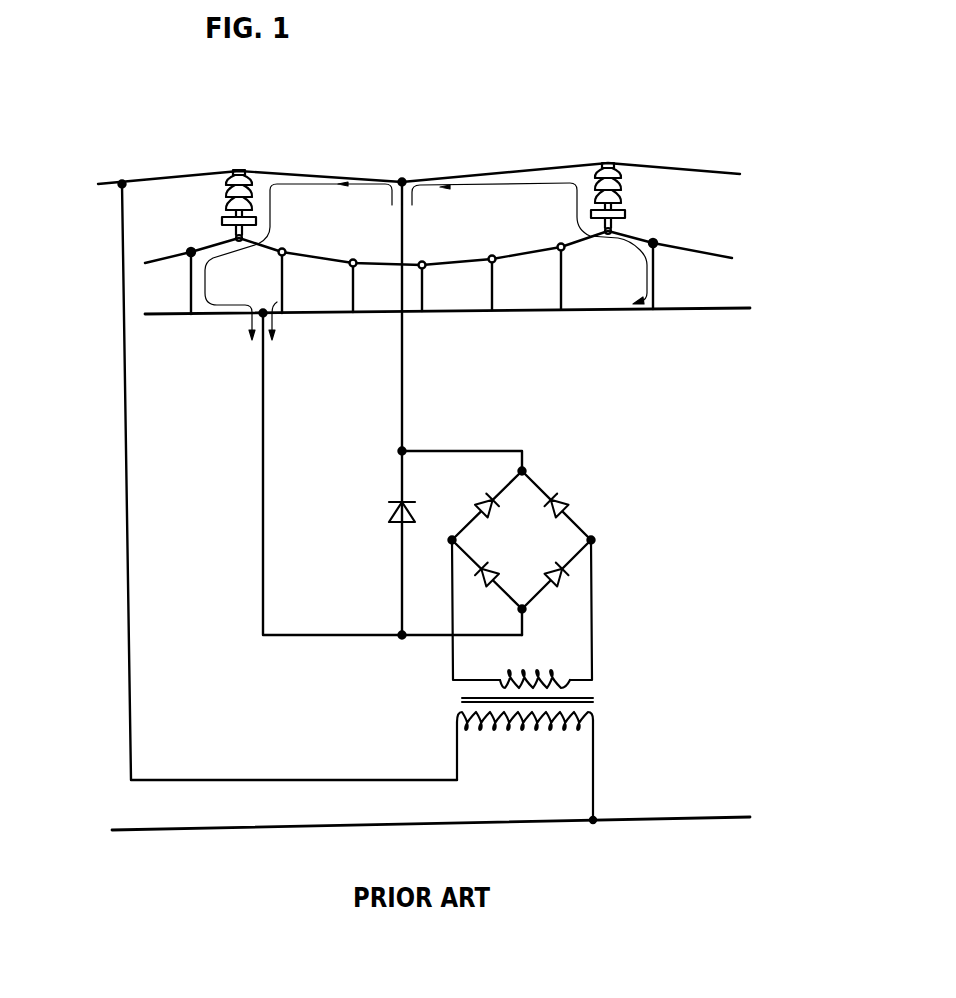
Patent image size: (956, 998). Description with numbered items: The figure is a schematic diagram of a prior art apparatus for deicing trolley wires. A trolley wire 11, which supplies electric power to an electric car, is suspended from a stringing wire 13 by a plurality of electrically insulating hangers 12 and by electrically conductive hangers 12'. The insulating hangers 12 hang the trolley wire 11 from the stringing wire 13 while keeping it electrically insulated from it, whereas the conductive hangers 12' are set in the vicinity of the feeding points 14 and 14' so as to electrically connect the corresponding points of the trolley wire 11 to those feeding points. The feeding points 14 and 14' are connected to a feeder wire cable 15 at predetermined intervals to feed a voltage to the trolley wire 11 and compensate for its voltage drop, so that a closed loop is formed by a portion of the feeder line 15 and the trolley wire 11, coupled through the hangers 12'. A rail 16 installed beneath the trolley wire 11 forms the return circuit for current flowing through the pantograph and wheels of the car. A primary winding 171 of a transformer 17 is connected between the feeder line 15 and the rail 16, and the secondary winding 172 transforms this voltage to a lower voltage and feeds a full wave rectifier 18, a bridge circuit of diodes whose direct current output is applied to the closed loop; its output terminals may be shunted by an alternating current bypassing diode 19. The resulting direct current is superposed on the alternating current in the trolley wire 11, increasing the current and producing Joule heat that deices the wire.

The trolley wire 11 is at (710, 306).
The electrically insulating hanger 12 is at (439, 279).
The electrically conductive hanger 12' is at (416, 276).
The stringing wire 13 is at (518, 255).
The feeding point 14 is at (219, 205).
The feeding point 14' is at (627, 198).
The feeder wire cable 15 is at (477, 178).
The rail 16 is at (687, 817).
The transformer 17 is at (600, 700).
The primary winding 171 is at (540, 728).
The secondary winding 172 is at (537, 672).
The full wave rectifier 18 is at (603, 544).
The alternating current bypassing diode 19 is at (393, 518).